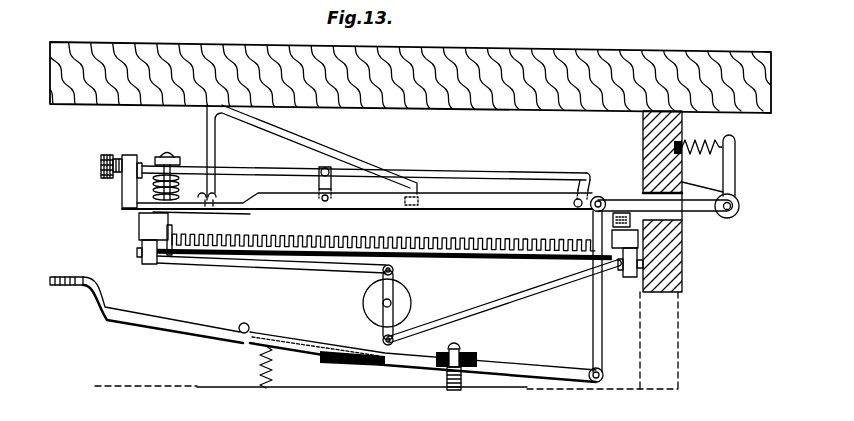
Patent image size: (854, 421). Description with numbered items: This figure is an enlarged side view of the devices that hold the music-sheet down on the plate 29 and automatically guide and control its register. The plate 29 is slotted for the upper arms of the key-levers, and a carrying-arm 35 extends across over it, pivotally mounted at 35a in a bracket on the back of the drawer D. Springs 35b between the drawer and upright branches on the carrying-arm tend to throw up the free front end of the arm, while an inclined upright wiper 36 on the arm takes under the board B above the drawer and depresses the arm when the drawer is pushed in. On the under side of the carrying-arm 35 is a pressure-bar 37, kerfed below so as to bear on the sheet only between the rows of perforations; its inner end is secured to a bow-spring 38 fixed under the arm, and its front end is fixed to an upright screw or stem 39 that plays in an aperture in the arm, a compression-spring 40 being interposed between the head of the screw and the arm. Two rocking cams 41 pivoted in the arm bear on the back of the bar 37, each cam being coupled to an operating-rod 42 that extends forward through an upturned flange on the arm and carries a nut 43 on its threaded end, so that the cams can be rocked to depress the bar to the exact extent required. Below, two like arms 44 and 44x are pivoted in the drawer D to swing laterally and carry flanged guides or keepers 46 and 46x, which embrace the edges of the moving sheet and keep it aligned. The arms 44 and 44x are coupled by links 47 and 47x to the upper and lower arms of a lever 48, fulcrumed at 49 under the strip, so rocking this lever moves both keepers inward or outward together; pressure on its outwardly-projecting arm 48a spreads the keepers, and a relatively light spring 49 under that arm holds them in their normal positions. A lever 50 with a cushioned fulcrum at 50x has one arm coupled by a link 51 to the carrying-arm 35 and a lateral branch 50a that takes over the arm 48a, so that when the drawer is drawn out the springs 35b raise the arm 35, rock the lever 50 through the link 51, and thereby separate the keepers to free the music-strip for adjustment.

The board B is at (258, 43).
The drawer D is at (682, 265).
The plate 29 is at (496, 256).
The carrying-arm 35 is at (473, 196).
The pivot of carrying-arm 35a is at (740, 211).
The springs 35b is at (704, 142).
The inclined upright wiper 36 is at (330, 150).
The pressure-bar 37 is at (357, 214).
The bow-spring 38 is at (621, 212).
The upright screw or stem 39 is at (185, 147).
The compression-spring 40 is at (179, 187).
The rocking cams 41 is at (318, 182).
The operating-rod 42 is at (265, 167).
The nuts 43 is at (118, 155).
The arm 44 is at (139, 244).
The arm 44x is at (628, 279).
The flanged guide or keeper 46 is at (171, 227).
The flanged guide or keeper 46x is at (611, 234).
The link 47 is at (322, 267).
The link 47x is at (548, 290).
The lever 48 is at (384, 303).
The outwardly-projecting arm 48a is at (164, 305).
The fulcrum and spring 49 is at (395, 301).
The lever 50 is at (547, 364).
The lateral branch 50a is at (247, 323).
The cushioned fulcrum 50x is at (457, 348).
The link 51 is at (603, 344).